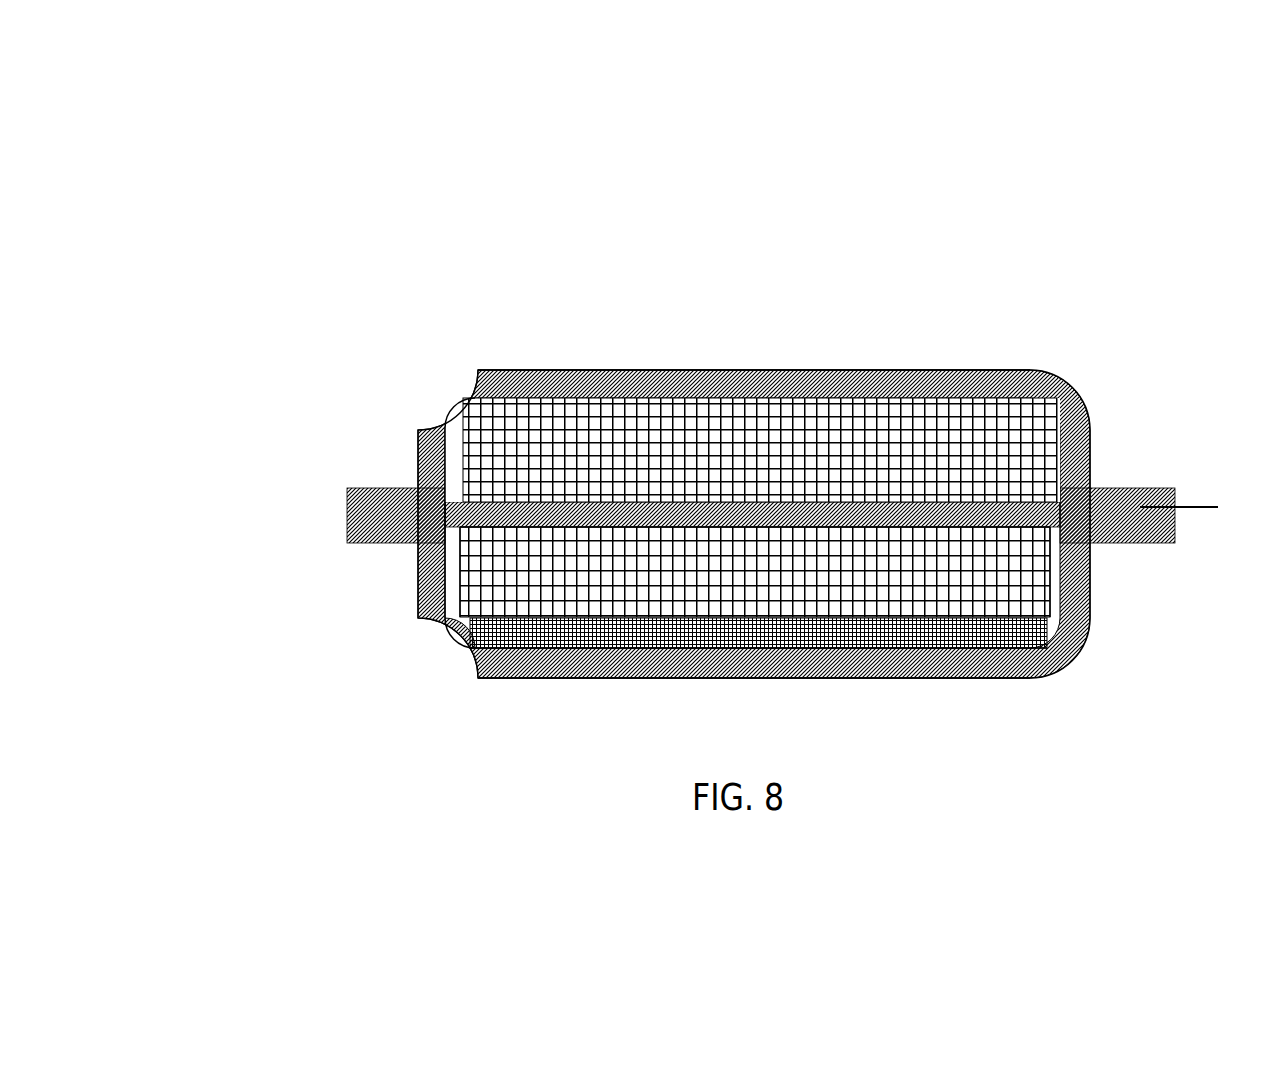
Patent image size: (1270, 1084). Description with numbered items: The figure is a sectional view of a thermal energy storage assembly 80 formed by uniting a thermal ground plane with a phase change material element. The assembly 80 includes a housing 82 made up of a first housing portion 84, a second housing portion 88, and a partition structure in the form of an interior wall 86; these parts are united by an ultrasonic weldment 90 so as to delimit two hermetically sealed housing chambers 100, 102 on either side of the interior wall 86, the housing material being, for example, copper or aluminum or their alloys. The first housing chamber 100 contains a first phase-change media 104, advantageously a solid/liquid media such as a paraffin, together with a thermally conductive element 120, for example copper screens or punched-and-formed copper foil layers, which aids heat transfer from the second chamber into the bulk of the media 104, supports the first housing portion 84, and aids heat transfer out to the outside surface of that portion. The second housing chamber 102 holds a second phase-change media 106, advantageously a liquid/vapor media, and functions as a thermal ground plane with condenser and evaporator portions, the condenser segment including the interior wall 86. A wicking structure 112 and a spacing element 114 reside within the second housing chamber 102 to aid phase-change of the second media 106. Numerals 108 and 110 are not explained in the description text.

The assembly 80 is at (978, 262).
The housing 82 is at (750, 350).
The first housing portion 84 is at (530, 372).
The interior wall 86 is at (1042, 508).
The second housing portion 88 is at (1000, 668).
The ultrasonic weldment 90 is at (338, 488).
The first housing chamber 100 is at (446, 454).
The second housing chamber 102 is at (462, 586).
The first phase-change media 104 is at (437, 421).
The second phase-change media 106 is at (1035, 588).
The lower chamber boundary 108 is at (488, 538).
The fine mesh layer 110 is at (464, 645).
The wicking structure 112 is at (485, 650).
The spacing element 114 is at (1037, 562).
The thermally conductive element 120 is at (998, 444).